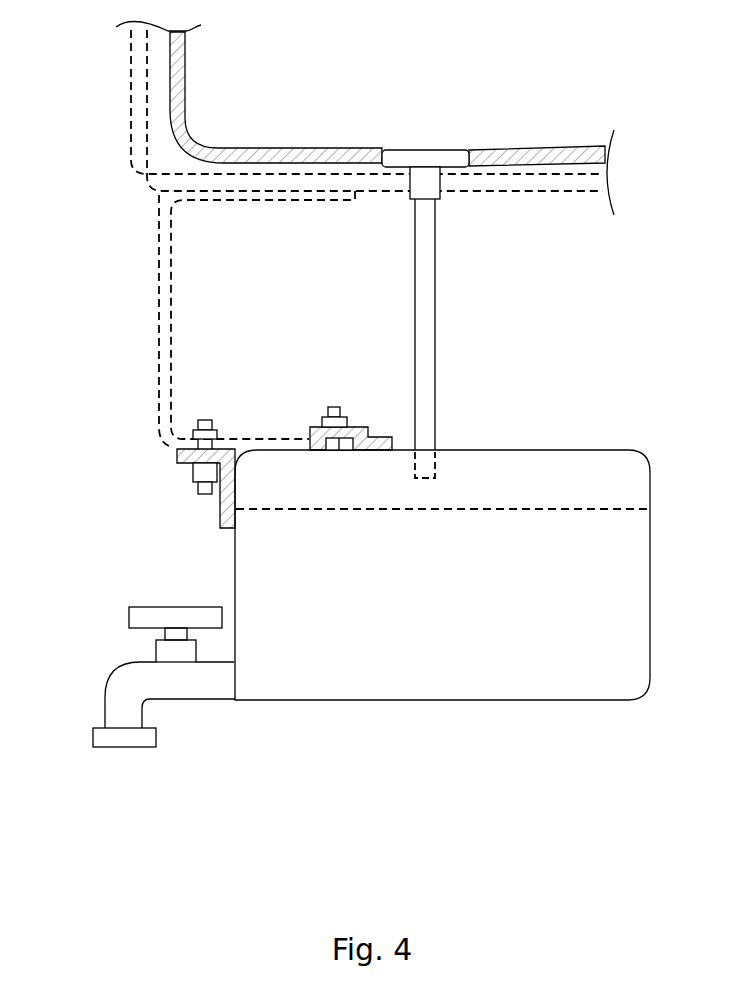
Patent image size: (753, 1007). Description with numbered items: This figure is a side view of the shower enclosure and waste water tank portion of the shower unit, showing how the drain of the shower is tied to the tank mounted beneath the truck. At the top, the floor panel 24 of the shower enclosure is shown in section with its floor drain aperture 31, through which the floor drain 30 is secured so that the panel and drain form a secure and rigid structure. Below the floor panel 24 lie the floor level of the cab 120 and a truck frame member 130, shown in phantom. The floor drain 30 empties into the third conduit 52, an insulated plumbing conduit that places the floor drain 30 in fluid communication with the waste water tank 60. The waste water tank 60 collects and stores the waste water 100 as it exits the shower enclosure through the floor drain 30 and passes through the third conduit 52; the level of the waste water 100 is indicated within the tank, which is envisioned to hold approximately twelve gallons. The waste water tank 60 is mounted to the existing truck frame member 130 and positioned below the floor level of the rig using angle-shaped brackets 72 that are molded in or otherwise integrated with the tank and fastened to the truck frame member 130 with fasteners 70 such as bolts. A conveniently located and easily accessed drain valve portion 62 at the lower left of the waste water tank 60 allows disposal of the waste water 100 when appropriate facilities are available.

The floor panel 24 is at (290, 152).
The floor drain 30 is at (427, 150).
The floor drain aperture 31 is at (376, 151).
The third conduit 52 is at (429, 318).
The waste water tank 60 is at (652, 567).
The drain valve portion 62 is at (125, 723).
The fasteners 70 is at (200, 471).
The brackets 72 is at (228, 500).
The waste water 100 is at (552, 507).
The cab 120 is at (137, 103).
The truck frame member 130 is at (163, 305).